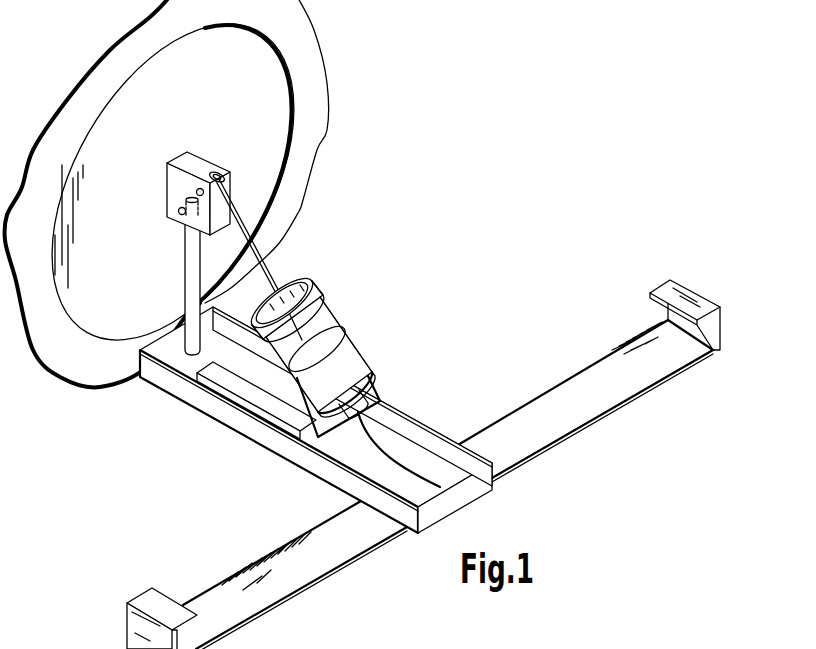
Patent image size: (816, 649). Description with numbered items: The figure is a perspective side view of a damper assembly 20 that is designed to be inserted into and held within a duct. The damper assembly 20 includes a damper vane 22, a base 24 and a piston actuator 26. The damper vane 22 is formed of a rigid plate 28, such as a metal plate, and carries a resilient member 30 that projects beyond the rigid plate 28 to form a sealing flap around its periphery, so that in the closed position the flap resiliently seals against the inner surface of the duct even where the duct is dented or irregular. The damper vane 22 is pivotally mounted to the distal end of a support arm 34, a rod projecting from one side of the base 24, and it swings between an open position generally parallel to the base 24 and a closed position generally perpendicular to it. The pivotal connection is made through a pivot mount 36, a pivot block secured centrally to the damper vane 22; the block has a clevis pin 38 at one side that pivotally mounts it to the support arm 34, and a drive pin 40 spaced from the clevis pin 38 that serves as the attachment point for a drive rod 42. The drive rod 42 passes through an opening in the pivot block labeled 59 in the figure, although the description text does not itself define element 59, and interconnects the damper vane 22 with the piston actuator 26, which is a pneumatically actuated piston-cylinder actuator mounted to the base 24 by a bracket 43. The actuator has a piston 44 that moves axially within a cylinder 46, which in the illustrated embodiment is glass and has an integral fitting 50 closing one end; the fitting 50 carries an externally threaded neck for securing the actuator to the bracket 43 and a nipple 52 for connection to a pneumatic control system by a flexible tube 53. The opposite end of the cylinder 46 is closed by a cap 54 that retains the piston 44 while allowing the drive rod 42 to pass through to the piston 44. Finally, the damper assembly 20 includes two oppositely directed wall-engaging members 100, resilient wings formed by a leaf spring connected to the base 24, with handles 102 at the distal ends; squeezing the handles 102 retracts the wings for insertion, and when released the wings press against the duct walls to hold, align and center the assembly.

The damper assembly 20 is at (518, 168).
The damper vane 22 is at (206, 193).
The base 24 is at (203, 398).
The piston actuator 26 is at (358, 371).
The rigid plate 28 is at (285, 128).
The resilient member 30 is at (300, 184).
The support arm 34 is at (190, 288).
The pivot mount 36 is at (189, 193).
The clevis pin 38 is at (181, 213).
The drive pin 40 is at (207, 150).
The drive rod 42 is at (276, 296).
The bracket 43 is at (260, 402).
The piston 44 is at (330, 347).
The cylinder 46 is at (360, 387).
The fitting 50 is at (307, 417).
The nipple 52 is at (378, 421).
The flexible tube 53 is at (513, 462).
The cap 54 is at (318, 292).
The hole 59 is at (226, 182).
The wall-engaging members 100 is at (587, 400).
The handles 102 is at (690, 307).